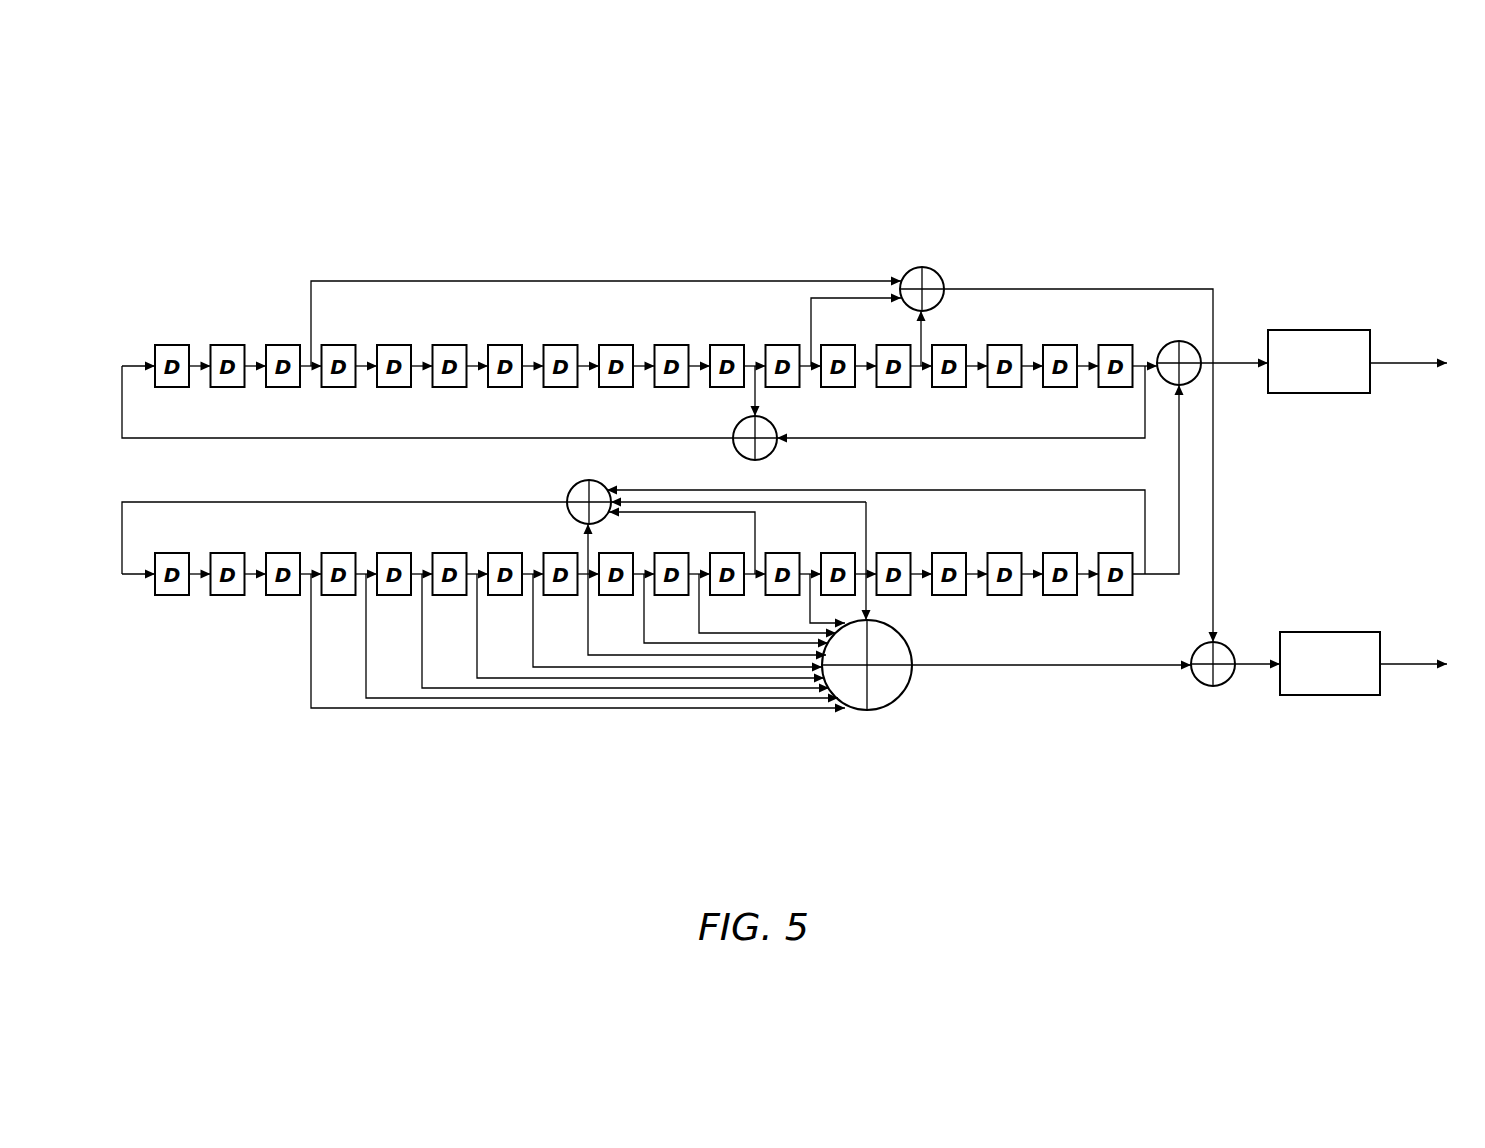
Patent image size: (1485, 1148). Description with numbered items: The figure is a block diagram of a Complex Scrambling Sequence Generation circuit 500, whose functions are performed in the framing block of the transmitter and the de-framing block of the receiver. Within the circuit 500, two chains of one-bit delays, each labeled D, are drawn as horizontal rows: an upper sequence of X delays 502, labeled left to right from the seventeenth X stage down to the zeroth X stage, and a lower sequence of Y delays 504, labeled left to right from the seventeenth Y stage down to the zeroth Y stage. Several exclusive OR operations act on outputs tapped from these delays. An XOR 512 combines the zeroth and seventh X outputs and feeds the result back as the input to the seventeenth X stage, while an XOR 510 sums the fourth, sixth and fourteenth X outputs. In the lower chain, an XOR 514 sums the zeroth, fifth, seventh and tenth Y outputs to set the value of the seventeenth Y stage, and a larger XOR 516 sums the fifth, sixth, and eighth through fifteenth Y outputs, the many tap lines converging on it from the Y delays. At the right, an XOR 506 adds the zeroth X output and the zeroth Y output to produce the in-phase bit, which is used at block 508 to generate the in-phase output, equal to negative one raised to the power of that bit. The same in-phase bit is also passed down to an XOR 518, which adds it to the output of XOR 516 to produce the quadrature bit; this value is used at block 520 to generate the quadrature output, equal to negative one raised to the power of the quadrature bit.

The Complex Scrambling Sequence Generation circuit 500 is at (1067, 154).
The sequence of X delays 502 is at (250, 311).
The sequence of Y delays 504 is at (256, 644).
The exclusive OR (XOR) 506 is at (1164, 347).
The in-phase output generation block 508 is at (1317, 330).
The XOR 510 is at (938, 274).
The XOR 512 is at (770, 423).
The XOR 514 is at (575, 487).
The XOR 516 is at (899, 697).
The XOR 518 is at (1197, 681).
The quadrature output generation block 520 is at (1335, 695).